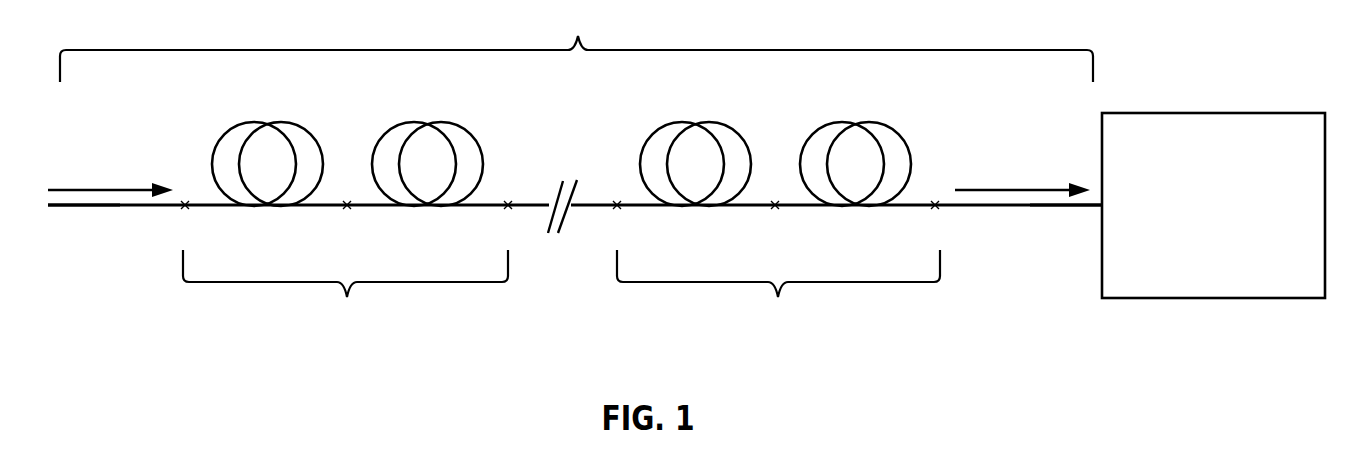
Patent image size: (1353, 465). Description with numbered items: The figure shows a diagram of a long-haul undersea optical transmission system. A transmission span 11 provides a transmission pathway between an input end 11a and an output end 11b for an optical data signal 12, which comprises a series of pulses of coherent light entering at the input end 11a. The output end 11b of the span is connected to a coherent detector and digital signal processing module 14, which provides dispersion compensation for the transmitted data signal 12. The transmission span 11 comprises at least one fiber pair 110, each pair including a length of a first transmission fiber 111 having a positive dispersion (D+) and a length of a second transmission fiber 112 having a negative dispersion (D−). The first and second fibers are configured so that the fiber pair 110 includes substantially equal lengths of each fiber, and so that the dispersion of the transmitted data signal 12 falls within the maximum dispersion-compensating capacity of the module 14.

The transmission span 11 is at (575, 119).
The input end 11a is at (95, 238).
The output end 11b is at (1087, 238).
The optical data signal 12 is at (166, 175).
The coherent detector and digital signal processing module 14 is at (1227, 105).
The fiber pair 110 is at (561, 289).
The first transmission fiber 111 is at (287, 85).
The second transmission fiber 112 is at (410, 85).